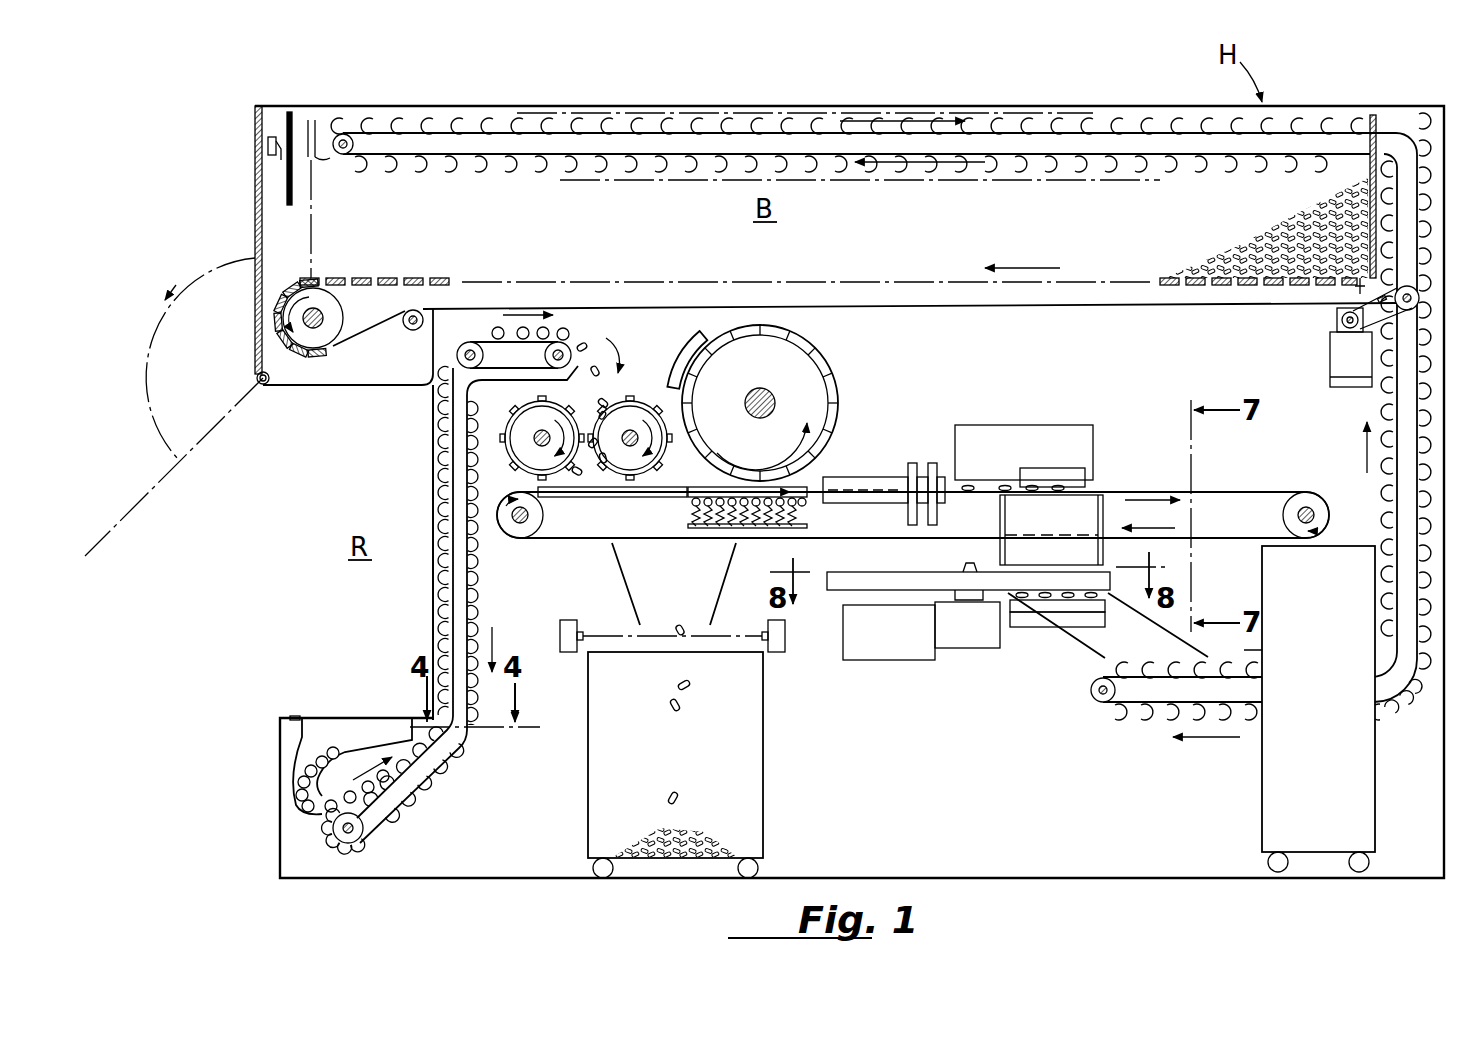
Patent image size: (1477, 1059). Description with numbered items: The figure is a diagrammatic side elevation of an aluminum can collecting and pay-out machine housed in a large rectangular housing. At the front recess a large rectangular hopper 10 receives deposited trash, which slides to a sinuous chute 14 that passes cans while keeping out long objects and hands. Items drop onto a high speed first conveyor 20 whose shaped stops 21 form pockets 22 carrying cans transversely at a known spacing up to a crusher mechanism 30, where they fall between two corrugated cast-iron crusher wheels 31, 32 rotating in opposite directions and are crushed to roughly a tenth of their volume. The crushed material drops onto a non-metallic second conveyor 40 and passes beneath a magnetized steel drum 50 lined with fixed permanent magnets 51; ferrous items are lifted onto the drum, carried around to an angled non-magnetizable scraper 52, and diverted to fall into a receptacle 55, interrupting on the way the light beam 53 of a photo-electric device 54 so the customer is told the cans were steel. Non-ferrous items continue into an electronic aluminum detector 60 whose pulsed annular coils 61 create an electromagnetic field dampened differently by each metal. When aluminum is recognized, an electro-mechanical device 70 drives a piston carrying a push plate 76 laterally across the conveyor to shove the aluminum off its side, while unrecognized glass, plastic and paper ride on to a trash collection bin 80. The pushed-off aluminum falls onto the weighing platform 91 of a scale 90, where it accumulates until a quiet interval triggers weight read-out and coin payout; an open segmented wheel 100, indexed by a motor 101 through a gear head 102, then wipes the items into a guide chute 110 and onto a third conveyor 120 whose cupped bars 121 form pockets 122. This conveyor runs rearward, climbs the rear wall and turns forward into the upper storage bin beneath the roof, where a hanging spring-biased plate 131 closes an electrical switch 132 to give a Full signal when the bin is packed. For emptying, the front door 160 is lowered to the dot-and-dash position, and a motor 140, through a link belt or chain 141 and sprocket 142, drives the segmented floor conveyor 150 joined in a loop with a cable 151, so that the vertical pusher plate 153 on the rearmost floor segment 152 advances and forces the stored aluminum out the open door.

The hopper 10 is at (352, 717).
The chute 14 is at (305, 766).
The first conveyor 20 is at (443, 646).
The stops 21 is at (449, 782).
The pockets 22 is at (403, 814).
The crusher mechanism 30 is at (652, 396).
The crusher wheel 31 is at (527, 466).
The crusher wheel 32 is at (720, 487).
The second conveyor 40 is at (1247, 485).
The magnetized steel drum 50 is at (838, 357).
The permanent magnets 51 is at (840, 388).
The scraper 52 is at (693, 340).
The light beam 53 is at (712, 637).
The photo-electric device 54 is at (560, 630).
The receptacle 55 is at (750, 778).
The electronic aluminum detector 60 is at (928, 460).
The annular coils 61 is at (909, 462).
The electro-mechanical device 70 is at (1003, 423).
The push plate 76 is at (1072, 467).
The trash collection bin 80 is at (1285, 797).
The scale 90 is at (1030, 630).
The weighing platform 91 is at (1110, 601).
The open segmented wheel 100 is at (838, 592).
The motor 101 is at (882, 643).
The gear head 102 is at (953, 643).
The guide chute 110 is at (1105, 638).
The third conveyor 120 is at (621, 158).
The cupped bars 121 is at (1087, 700).
The pockets 122 is at (1078, 760).
The spring-biased plate 131 is at (288, 180).
The electrical switch 132 is at (268, 147).
The motor 140 is at (1340, 355).
The link belt or chain 141 is at (1428, 314).
The sprocket 142 is at (1419, 293).
The segmented floor conveyor 150 is at (417, 278).
The cable 151 is at (1118, 307).
The rearmost floor segment 152 is at (1352, 282).
The vertical pusher plate 153 is at (1373, 115).
The front door 160 is at (257, 232).